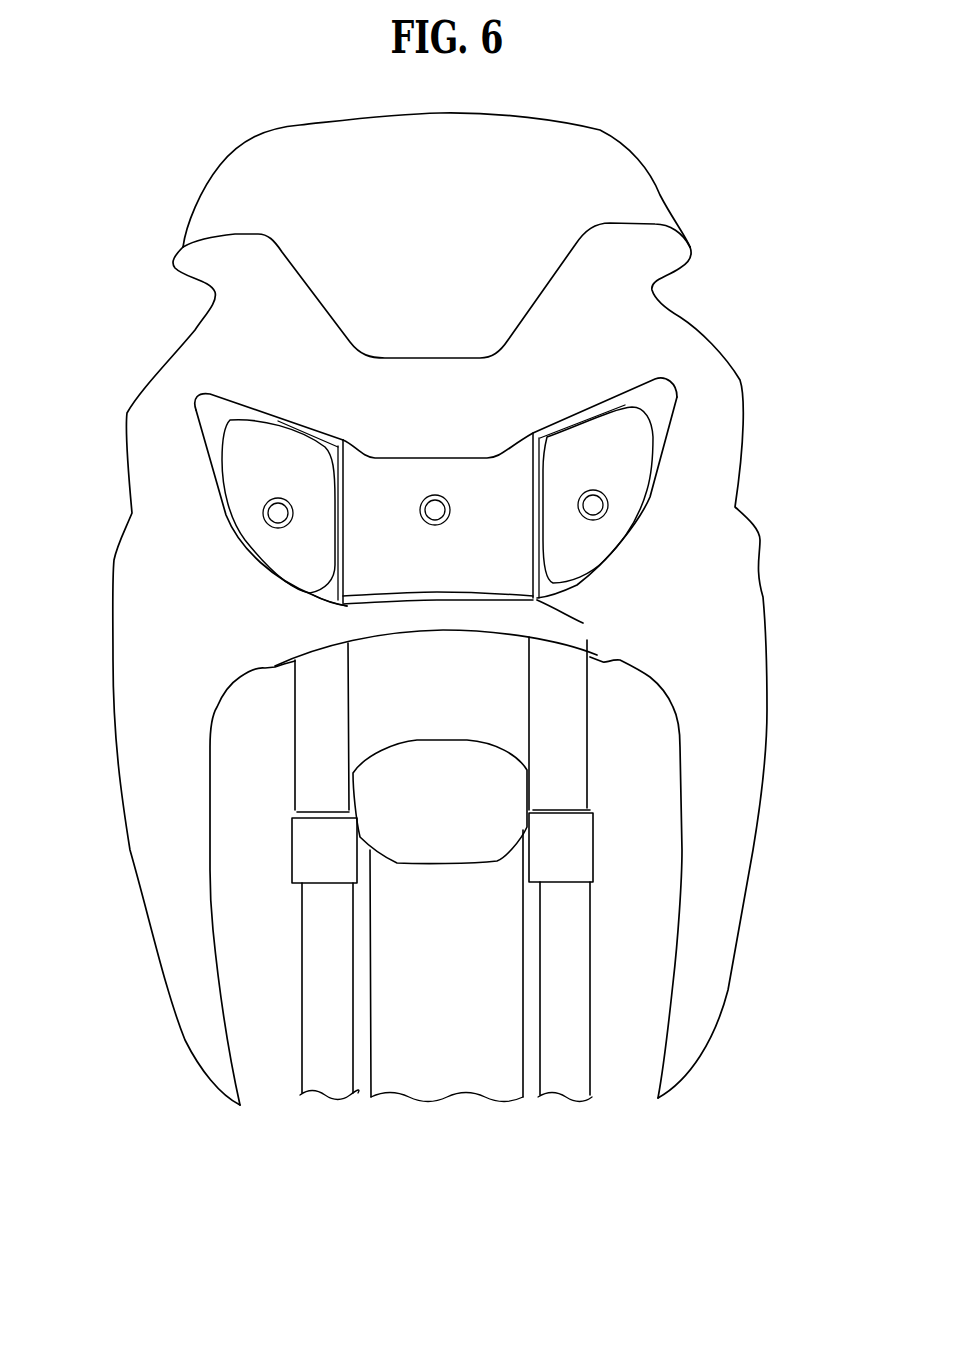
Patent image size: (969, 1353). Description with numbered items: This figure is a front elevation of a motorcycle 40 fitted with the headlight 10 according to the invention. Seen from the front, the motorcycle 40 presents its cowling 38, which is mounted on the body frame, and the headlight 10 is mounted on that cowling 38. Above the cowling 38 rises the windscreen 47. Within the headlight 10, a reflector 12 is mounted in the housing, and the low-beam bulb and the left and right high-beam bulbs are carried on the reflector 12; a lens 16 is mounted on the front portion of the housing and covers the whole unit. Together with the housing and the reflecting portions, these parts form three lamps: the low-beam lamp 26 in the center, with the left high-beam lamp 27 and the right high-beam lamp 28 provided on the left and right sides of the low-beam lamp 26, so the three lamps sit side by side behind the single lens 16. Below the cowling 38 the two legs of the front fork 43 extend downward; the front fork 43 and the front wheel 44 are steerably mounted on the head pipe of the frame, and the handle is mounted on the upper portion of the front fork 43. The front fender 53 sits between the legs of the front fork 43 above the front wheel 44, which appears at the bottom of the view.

The headlight 10 is at (381, 478).
The reflector 12 is at (489, 566).
The lens 16 is at (340, 603).
The low-beam lamp 26 is at (435, 487).
The left high-beam lamp 27 is at (618, 542).
The right high-beam lamp 28 is at (262, 547).
The cowling 38 is at (710, 347).
The motorcycle 40 is at (137, 182).
The front fork 43 is at (588, 718).
The front wheel 44 is at (450, 1059).
The windscreen 47 is at (660, 177).
The front fender 53 is at (436, 738).